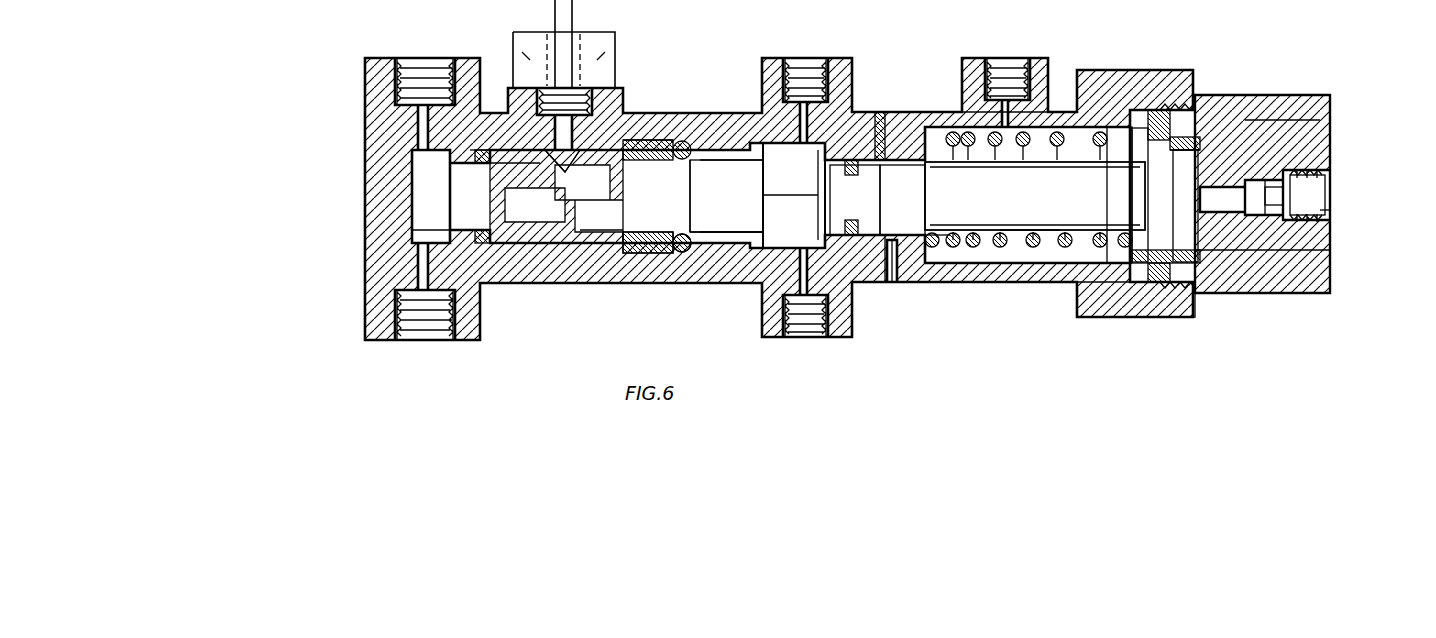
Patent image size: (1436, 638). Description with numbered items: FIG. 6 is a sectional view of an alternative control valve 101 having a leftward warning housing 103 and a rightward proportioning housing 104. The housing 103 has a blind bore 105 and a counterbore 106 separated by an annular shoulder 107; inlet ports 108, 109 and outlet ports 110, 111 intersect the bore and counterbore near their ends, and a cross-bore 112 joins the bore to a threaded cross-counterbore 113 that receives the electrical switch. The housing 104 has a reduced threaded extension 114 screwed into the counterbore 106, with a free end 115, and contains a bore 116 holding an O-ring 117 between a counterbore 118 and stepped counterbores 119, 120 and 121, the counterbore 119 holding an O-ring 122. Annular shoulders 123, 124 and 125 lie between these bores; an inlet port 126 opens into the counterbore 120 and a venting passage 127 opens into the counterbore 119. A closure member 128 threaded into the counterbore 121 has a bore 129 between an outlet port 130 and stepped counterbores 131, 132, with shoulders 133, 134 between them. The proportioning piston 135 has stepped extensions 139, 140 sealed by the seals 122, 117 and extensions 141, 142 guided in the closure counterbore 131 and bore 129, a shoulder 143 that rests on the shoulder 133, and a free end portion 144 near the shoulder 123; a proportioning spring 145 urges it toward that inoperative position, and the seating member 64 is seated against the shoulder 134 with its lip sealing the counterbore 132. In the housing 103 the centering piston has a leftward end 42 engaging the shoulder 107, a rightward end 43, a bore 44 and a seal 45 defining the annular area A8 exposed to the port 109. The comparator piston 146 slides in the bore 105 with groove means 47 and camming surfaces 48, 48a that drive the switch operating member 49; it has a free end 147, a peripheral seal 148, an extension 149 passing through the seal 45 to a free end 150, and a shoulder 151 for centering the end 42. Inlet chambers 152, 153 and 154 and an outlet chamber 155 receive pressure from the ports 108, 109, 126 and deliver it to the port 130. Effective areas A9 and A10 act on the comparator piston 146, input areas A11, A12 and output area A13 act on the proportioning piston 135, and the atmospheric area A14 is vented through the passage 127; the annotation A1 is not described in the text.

The control valve 101 is at (350, 92).
The leftward housing 103 is at (378, 176).
The rightward housing 104 is at (1103, 85).
The blind bore 105 is at (498, 258).
The counterbore 106 is at (765, 285).
The annular shoulder 107 is at (602, 255).
The inlet port 108 is at (438, 62).
The inlet port 109 is at (812, 62).
The outlet port 110 is at (418, 343).
The outlet port 111 is at (812, 340).
The cross-bore 112 is at (560, 132).
The threaded cross-counterbore 113 is at (590, 90).
The reduced threaded extension 114 is at (880, 120).
The free end 115 is at (738, 150).
The bore 116 is at (830, 212).
The sealing member 117 is at (860, 285).
The counterbore 118 is at (778, 250).
The stepped counterbore 119 is at (925, 240).
The stepped counterbore 120 is at (1032, 265).
The stepped counterbore 121 is at (1122, 305).
The sealing member 122 is at (945, 230).
The annular shoulder 123 is at (866, 172).
The annular shoulder 124 is at (855, 200).
The annular shoulder 125 is at (970, 245).
The inlet port 126 is at (1008, 62).
The venting passage 127 is at (888, 265).
The closure member 128 is at (1293, 95).
The bore 129 is at (1265, 212).
The outlet port 130 is at (1325, 212).
The stepped counterbore 131 is at (1200, 250).
The stepped counterbore 132 is at (1140, 100).
The annular shoulder 133 is at (1190, 228).
The annular shoulder 134 is at (1168, 300).
The proportioning piston 135 is at (1068, 190).
The stepped extension 139 is at (1085, 155).
The stepped extension 140 is at (794, 195).
The stepped extension 141 is at (1200, 148).
The stepped extension 142 is at (1230, 211).
The annular shoulder 143 is at (1215, 172).
The free end portion 144 is at (832, 190).
The proportioning spring 145 is at (1115, 245).
The comparator piston 146 is at (580, 273).
The free end portion 147 is at (455, 232).
The peripheral seal 148 is at (483, 236).
The extension means 149 is at (652, 257).
The free end 150 is at (726, 196).
The annular shoulder 151 is at (662, 160).
The inlet chamber 152 is at (420, 205).
The inlet chamber 153 is at (726, 216).
The inlet chamber 154 is at (1045, 245).
The outlet chamber 155 is at (1308, 196).
The centering piston leftward end 42 is at (601, 217).
The centering piston rightward end 43 is at (683, 254).
The centering piston bore 44 is at (690, 230).
The centering piston seal 45 is at (716, 235).
The peripheral groove means 47 is at (556, 196).
The camming surface 48 is at (515, 174).
The camming surface 48a is at (571, 173).
The switch operating member 49 is at (619, 133).
The seating member 64 is at (1177, 110).
The area A1 is at (645, 138).
The annular effective area A8 is at (684, 138).
The cross-sectional effective area A9 is at (482, 148).
The cross-sectional effective area A10 is at (716, 158).
The effective input area A11 is at (892, 262).
The annular effective input area A12 is at (975, 130).
The effective output area A13 is at (1188, 148).
The annular effective atmospheric area A14 is at (893, 156).